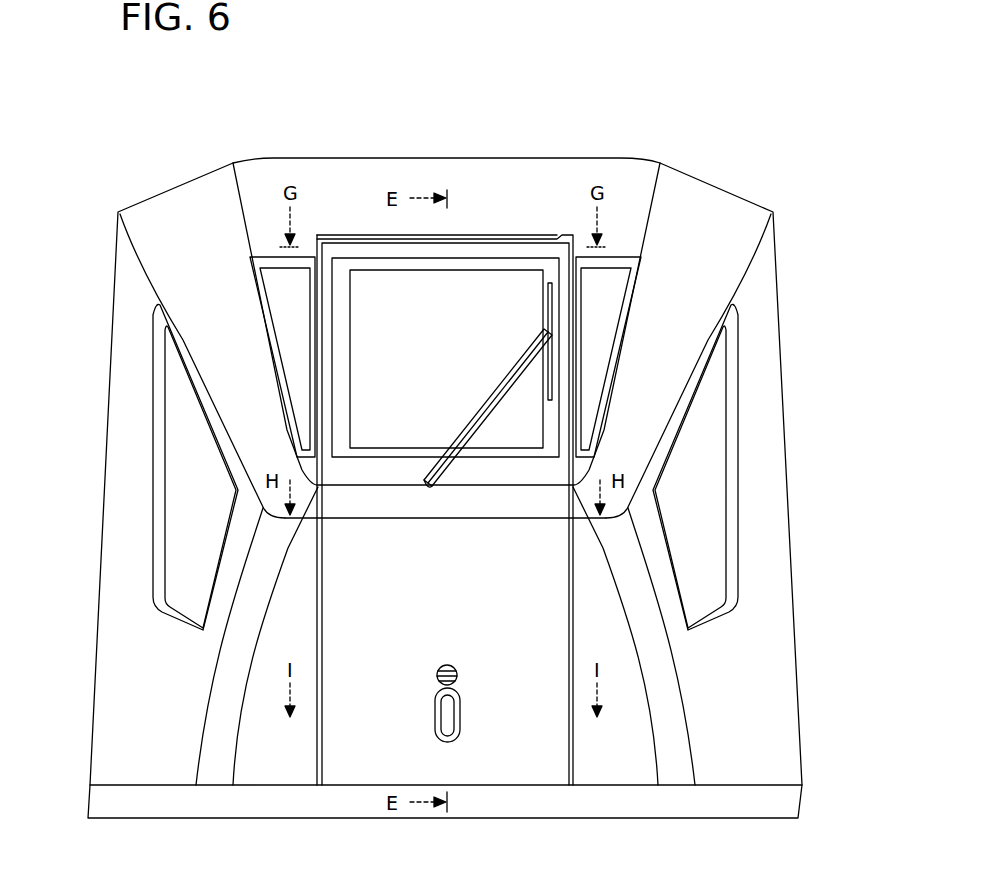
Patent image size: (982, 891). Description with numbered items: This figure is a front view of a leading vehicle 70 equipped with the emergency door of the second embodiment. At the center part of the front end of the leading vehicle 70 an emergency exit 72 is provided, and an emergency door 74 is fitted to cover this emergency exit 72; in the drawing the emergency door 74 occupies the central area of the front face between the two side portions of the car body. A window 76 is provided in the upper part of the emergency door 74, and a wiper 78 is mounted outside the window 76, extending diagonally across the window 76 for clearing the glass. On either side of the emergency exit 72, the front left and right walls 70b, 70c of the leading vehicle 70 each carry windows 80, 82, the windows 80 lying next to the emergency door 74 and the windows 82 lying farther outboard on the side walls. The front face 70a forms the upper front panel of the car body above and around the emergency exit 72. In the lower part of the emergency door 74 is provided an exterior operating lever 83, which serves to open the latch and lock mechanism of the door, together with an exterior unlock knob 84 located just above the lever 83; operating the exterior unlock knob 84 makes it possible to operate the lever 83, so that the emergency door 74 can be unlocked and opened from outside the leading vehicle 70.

The leading vehicle 70 is at (352, 186).
The front surface 70a is at (402, 157).
The front left and right wall 70b is at (760, 380).
The front left and right wall 70c is at (205, 320).
The emergency exit 72 is at (560, 236).
The emergency door 74 is at (468, 283).
The window 76 is at (503, 283).
The wiper 78 is at (487, 392).
The window 80 is at (257, 283).
The window 82 is at (178, 452).
The exterior operating lever 83 is at (457, 702).
The exterior unlock knob 84 is at (452, 667).